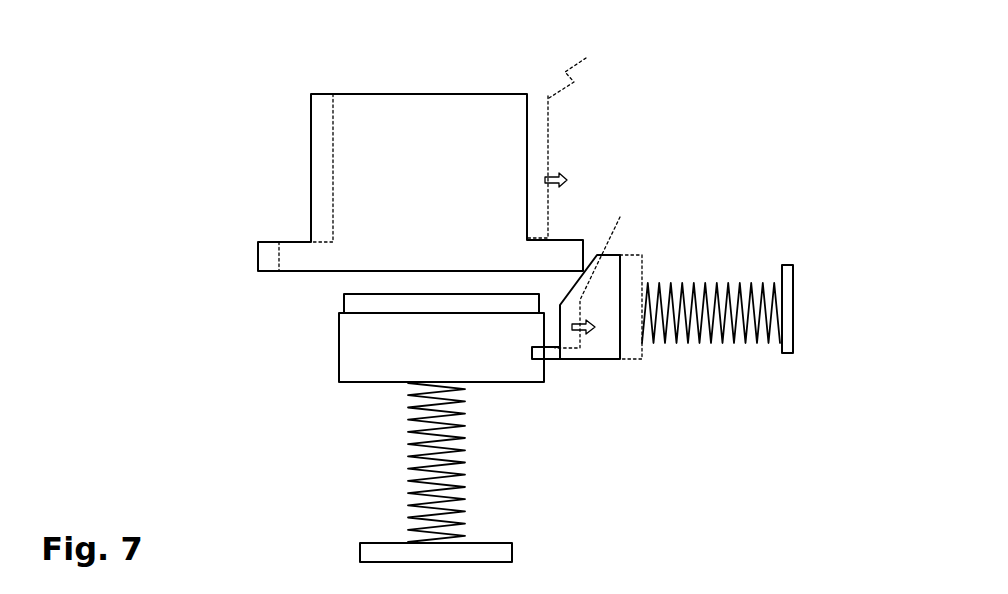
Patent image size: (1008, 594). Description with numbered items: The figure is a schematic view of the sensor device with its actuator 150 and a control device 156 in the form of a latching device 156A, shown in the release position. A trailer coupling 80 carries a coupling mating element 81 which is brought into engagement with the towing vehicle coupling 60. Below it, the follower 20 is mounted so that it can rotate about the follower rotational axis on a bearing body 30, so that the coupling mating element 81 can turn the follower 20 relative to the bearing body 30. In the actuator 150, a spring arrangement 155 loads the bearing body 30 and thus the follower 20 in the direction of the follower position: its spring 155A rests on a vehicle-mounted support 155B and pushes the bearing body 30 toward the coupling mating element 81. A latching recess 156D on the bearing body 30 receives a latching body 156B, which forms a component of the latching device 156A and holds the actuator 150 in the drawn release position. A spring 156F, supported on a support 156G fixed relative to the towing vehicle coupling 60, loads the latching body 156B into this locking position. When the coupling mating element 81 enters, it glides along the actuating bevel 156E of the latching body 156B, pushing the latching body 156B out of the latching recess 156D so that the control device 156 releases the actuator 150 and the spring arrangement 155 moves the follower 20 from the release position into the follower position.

The trailer coupling 80 is at (318, 82).
The coupling mating element 81 is at (528, 96).
The actuator 150 is at (339, 293).
The towing vehicle coupling 60 is at (350, 366).
The follower 20 is at (343, 297).
The bearing body 30 is at (343, 358).
The spring arrangement 155 is at (468, 472).
The spring 155A is at (453, 498).
The vehicle-mounted support 155B is at (508, 553).
The control device 156 is at (701, 289).
The latching device 156A is at (645, 232).
The latching body 156B is at (613, 360).
The latching recess 156D is at (550, 362).
The actuating bevel 156E is at (589, 257).
The spring 156F is at (693, 284).
The support 156G is at (793, 297).